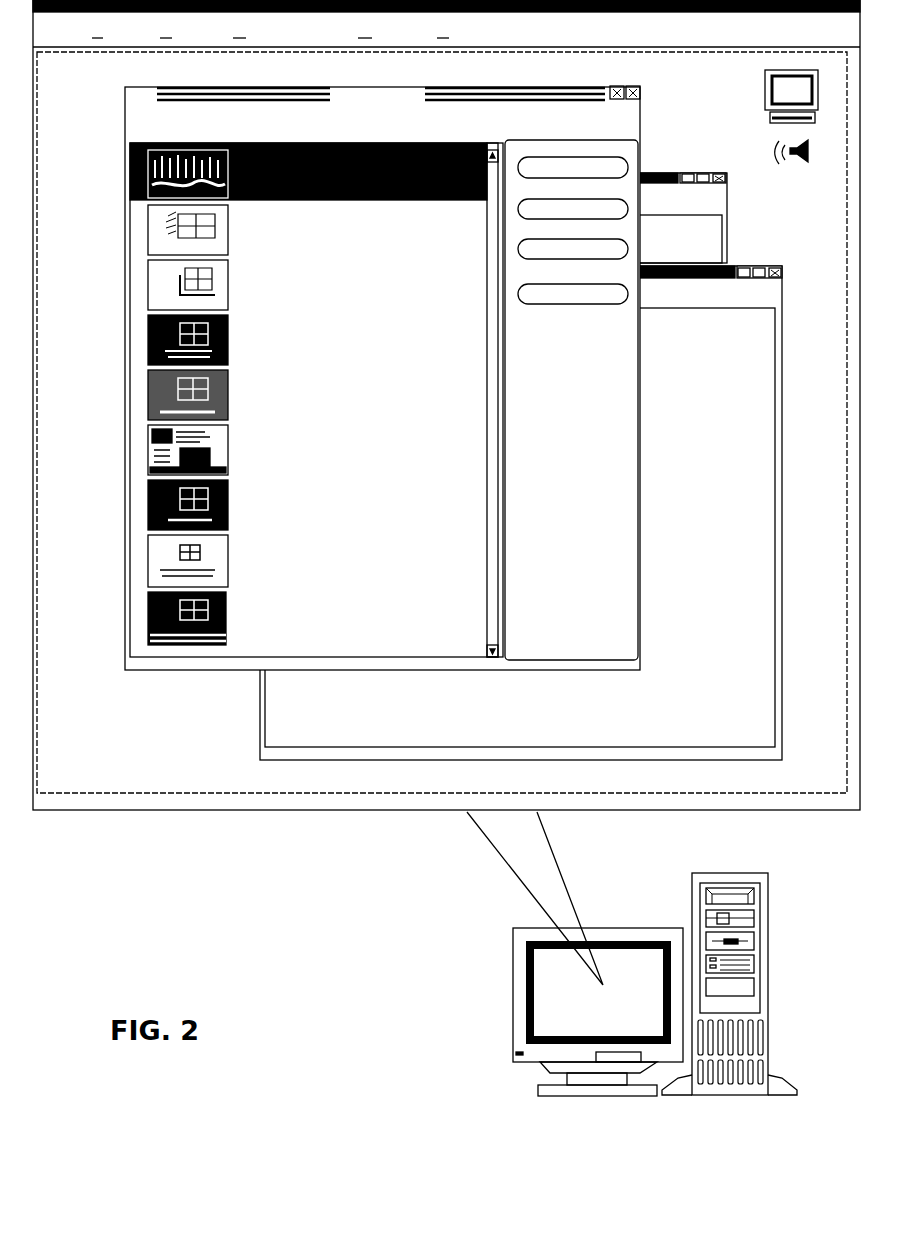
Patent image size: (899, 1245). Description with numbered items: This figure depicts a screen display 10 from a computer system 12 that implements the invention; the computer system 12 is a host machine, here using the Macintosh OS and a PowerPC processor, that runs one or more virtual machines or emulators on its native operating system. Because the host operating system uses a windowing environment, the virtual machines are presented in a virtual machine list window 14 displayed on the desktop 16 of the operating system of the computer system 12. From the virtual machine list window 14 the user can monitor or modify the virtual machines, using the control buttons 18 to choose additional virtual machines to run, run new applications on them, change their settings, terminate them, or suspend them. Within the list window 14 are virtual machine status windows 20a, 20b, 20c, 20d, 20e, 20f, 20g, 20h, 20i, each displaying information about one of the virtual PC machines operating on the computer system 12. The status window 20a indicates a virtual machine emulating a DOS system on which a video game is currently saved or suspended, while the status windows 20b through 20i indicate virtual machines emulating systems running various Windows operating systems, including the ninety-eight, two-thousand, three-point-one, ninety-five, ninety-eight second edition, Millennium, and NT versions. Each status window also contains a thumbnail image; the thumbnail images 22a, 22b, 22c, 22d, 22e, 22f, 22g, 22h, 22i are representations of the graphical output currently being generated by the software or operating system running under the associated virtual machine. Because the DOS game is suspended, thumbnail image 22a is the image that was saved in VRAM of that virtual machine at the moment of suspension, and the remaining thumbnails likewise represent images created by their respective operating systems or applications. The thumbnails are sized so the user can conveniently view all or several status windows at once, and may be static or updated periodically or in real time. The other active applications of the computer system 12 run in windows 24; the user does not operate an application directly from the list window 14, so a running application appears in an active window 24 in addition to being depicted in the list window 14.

The screen display 10 is at (330, 811).
The computer system 12 is at (496, 1035).
The virtual machine list window 14 is at (207, 671).
The desktop 16 is at (750, 778).
The control buttons 18 is at (628, 153).
The virtual machine status window 20a is at (425, 178).
The virtual machine status window 20b is at (420, 242).
The virtual machine status window 20c is at (420, 296).
The virtual machine status window 20d is at (420, 351).
The virtual machine status window 20e is at (428, 397).
The virtual machine status window 20f is at (428, 452).
The virtual machine status window 20g is at (452, 514).
The virtual machine status window 20h is at (452, 568).
The virtual machine status window 20i is at (452, 613).
The thumbnail image 22a is at (148, 180).
The thumbnail image 22b is at (148, 233).
The thumbnail image 22c is at (148, 286).
The thumbnail image 22d is at (148, 338).
The thumbnail image 22e is at (148, 396).
The thumbnail image 22f is at (148, 451).
The thumbnail image 22g is at (148, 506).
The thumbnail image 22h is at (148, 561).
The thumbnail image 22i is at (148, 621).
The windows 24 is at (728, 240).